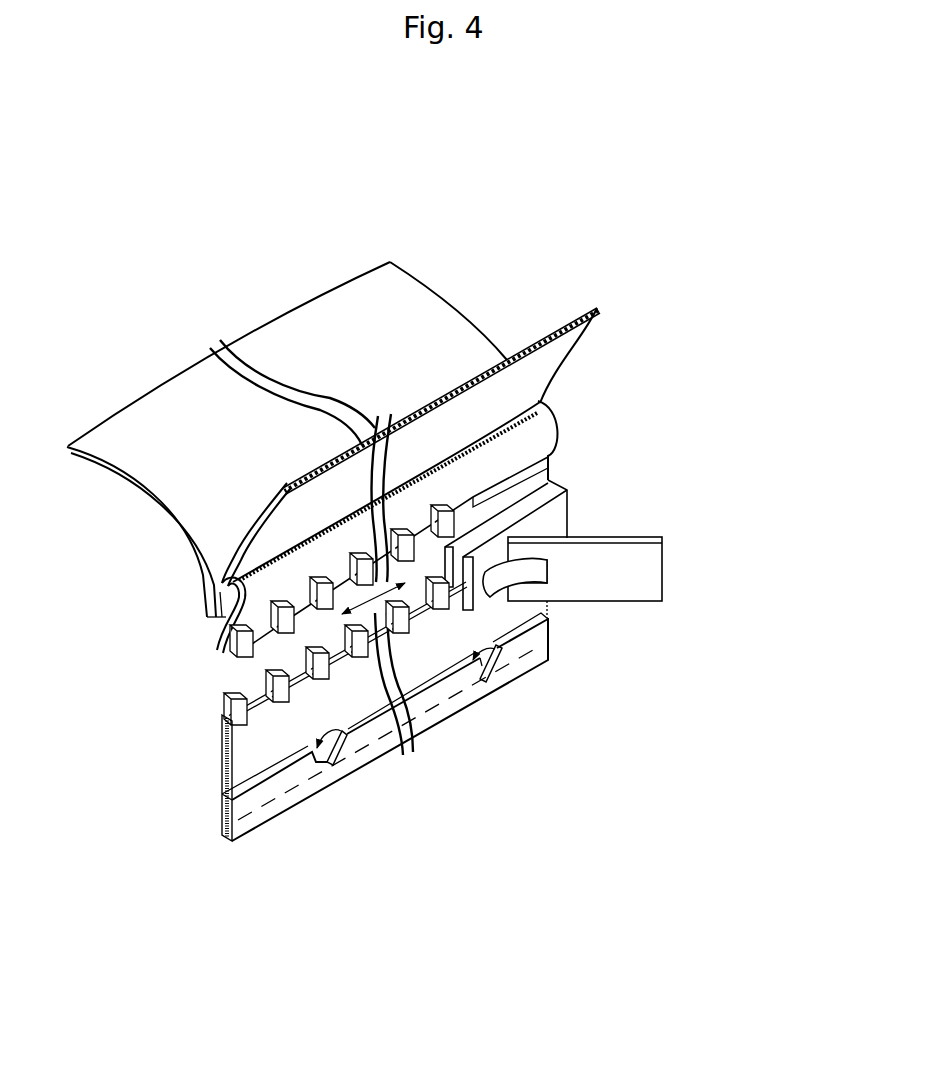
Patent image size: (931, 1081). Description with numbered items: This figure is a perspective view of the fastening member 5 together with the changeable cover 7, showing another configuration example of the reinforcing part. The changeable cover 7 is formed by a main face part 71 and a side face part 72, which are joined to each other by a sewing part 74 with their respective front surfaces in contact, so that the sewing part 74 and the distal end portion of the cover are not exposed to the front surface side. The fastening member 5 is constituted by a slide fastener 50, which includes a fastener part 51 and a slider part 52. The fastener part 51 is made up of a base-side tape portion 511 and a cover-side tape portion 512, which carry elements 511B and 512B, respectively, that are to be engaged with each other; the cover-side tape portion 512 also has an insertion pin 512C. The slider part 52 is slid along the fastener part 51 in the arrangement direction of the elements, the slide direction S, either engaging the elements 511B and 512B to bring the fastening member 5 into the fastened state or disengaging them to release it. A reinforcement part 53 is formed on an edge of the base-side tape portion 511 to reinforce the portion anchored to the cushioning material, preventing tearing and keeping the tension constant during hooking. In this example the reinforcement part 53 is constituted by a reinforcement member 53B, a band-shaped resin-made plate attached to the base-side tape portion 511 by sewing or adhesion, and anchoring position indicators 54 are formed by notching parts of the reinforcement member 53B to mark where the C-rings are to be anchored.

The fastening member 5 is at (190, 803).
The changeable cover 7 is at (331, 505).
The main face part 71 is at (420, 437).
The side face part 72 is at (183, 450).
The sewing part 74 is at (230, 602).
The slide fastener 50 is at (487, 535).
The fastener part 51 is at (459, 535).
The base-side tape portion 511 is at (431, 602).
The elements 511B is at (280, 673).
The cover-side tape portion 512 is at (472, 507).
The elements 512B is at (445, 525).
The insertion pin 512C is at (545, 468).
The slider part 52 is at (627, 621).
The reinforcement part 53 is at (417, 759).
The reinforcement member 53B is at (433, 717).
The anchoring position indicators 54 is at (478, 606).
The slide direction S is at (357, 603).